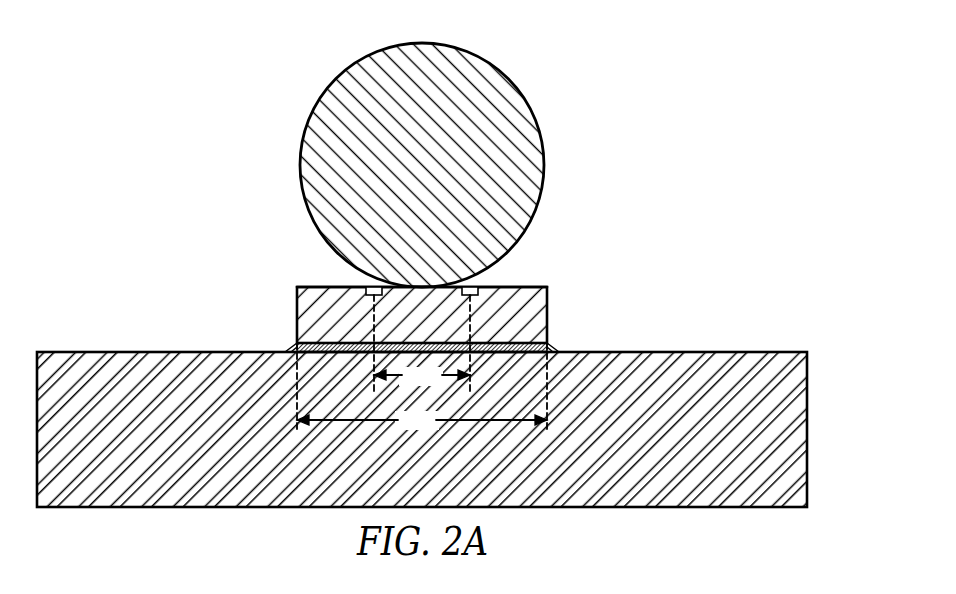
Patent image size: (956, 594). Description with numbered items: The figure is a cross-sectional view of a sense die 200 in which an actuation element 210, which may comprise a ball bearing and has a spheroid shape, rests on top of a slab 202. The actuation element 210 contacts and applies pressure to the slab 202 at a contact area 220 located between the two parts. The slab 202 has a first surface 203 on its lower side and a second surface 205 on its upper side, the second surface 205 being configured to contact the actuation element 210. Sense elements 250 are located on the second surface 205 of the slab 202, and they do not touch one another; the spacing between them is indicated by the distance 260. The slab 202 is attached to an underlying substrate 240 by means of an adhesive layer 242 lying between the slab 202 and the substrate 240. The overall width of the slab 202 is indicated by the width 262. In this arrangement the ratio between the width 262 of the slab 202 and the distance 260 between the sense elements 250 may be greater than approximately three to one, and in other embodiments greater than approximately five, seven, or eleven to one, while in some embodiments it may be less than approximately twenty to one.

The sense die 200 is at (260, 92).
The actuation element 210 is at (512, 108).
The contact area 220 is at (423, 274).
The sense elements 250 is at (353, 288).
The second surface 205 is at (541, 279).
The slab 202 is at (538, 305).
The adhesive layer 242 is at (556, 346).
The first surface 203 is at (321, 352).
The substrate 240 is at (790, 415).
The distance 260 is at (422, 343).
The width 262 is at (422, 387).